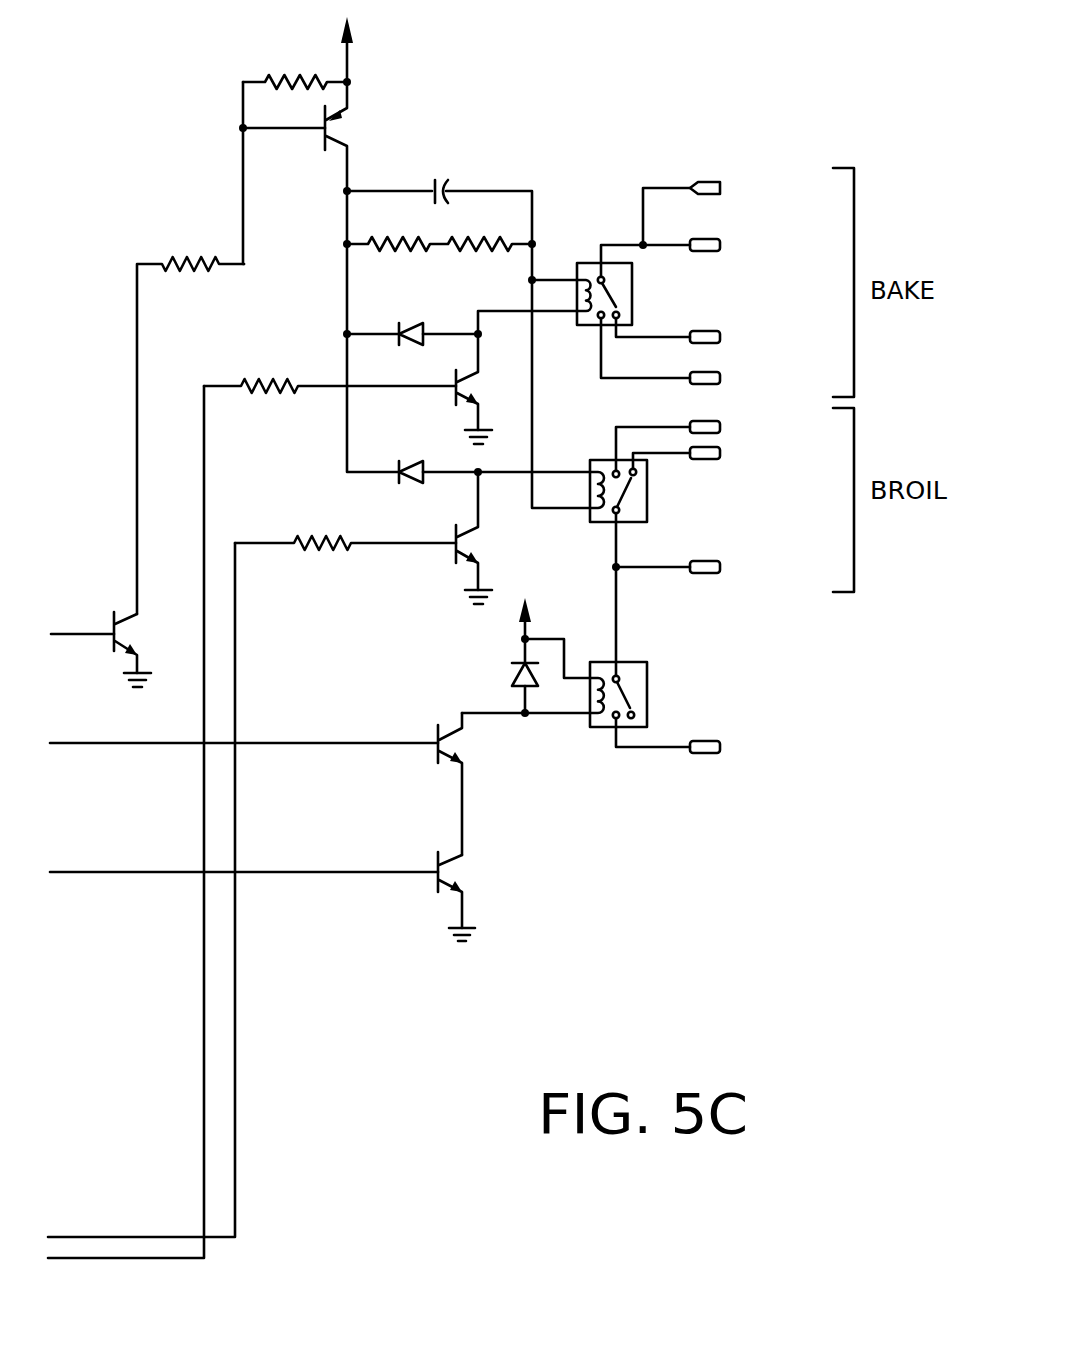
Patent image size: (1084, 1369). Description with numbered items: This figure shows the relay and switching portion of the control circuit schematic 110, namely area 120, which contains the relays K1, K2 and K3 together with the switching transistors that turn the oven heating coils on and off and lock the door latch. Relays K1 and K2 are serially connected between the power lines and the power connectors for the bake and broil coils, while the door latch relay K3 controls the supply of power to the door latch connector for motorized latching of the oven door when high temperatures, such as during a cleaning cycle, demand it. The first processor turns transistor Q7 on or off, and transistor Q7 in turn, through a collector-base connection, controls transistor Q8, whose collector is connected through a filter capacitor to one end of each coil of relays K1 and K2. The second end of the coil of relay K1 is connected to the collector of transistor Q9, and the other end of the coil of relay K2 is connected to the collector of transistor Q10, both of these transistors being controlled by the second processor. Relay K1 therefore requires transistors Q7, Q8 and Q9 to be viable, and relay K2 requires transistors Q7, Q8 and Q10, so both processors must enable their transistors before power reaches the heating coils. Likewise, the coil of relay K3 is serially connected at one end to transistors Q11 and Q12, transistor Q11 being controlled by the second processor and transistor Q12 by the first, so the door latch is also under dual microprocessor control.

The transistor Q7 is at (125, 646).
The transistor Q8 is at (343, 127).
The transistor Q9 is at (472, 388).
The transistor Q10 is at (472, 548).
The transistor Q11 is at (452, 745).
The transistor Q12 is at (450, 872).
The relay K1 is at (692, 287).
The relay K2 is at (699, 544).
The door latch relay K3 is at (699, 712).
The schematic 110 is at (463, 957).
The relay and switching area 120 is at (662, 138).